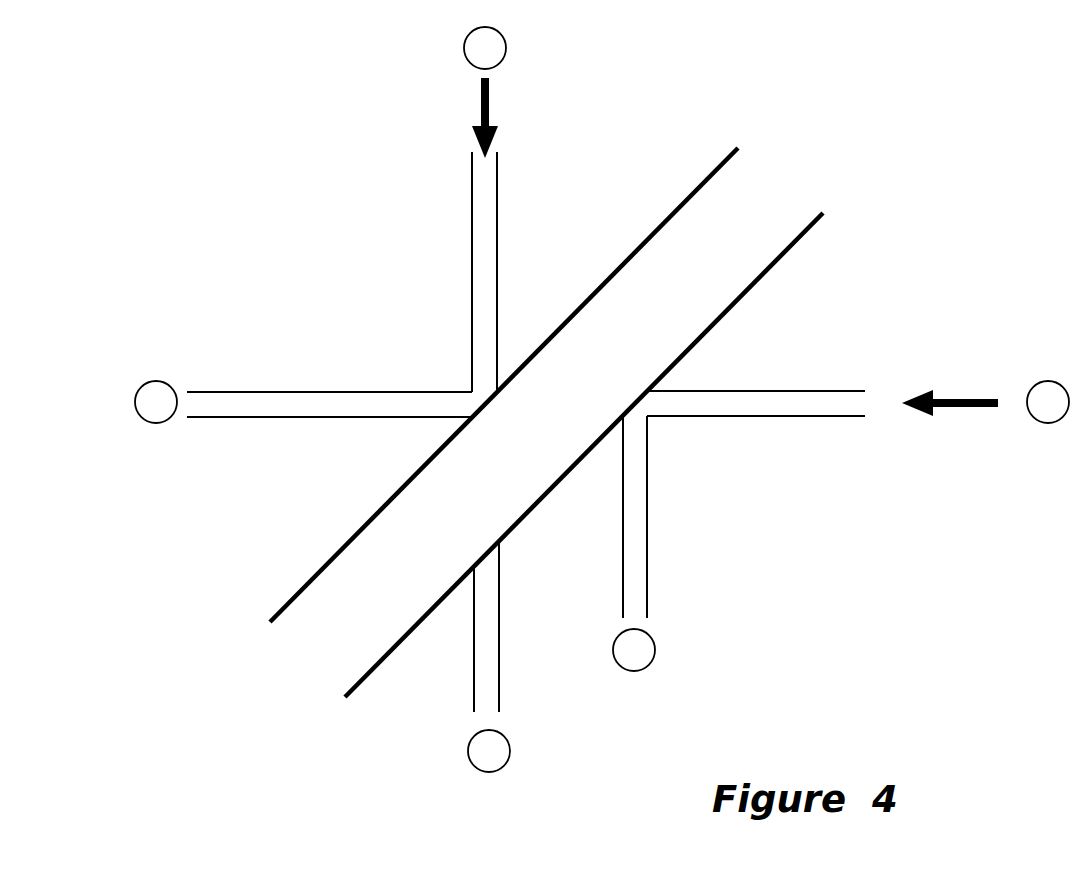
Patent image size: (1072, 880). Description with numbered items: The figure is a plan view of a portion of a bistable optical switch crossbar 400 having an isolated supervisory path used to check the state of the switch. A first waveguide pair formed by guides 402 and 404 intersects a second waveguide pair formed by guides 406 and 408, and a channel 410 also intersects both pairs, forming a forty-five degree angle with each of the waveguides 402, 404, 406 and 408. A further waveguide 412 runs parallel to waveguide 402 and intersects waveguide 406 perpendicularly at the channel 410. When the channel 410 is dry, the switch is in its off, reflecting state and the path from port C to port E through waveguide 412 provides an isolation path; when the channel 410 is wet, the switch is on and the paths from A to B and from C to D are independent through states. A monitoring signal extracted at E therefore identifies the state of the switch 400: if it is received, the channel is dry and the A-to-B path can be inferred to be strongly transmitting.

The crossbar 400 is at (984, 146).
The waveguide 402 is at (497, 252).
The waveguide 404 is at (501, 653).
The waveguide 406 is at (757, 391).
The waveguide 408 is at (365, 392).
The channel 410 is at (787, 163).
The waveguide 412 is at (647, 555).